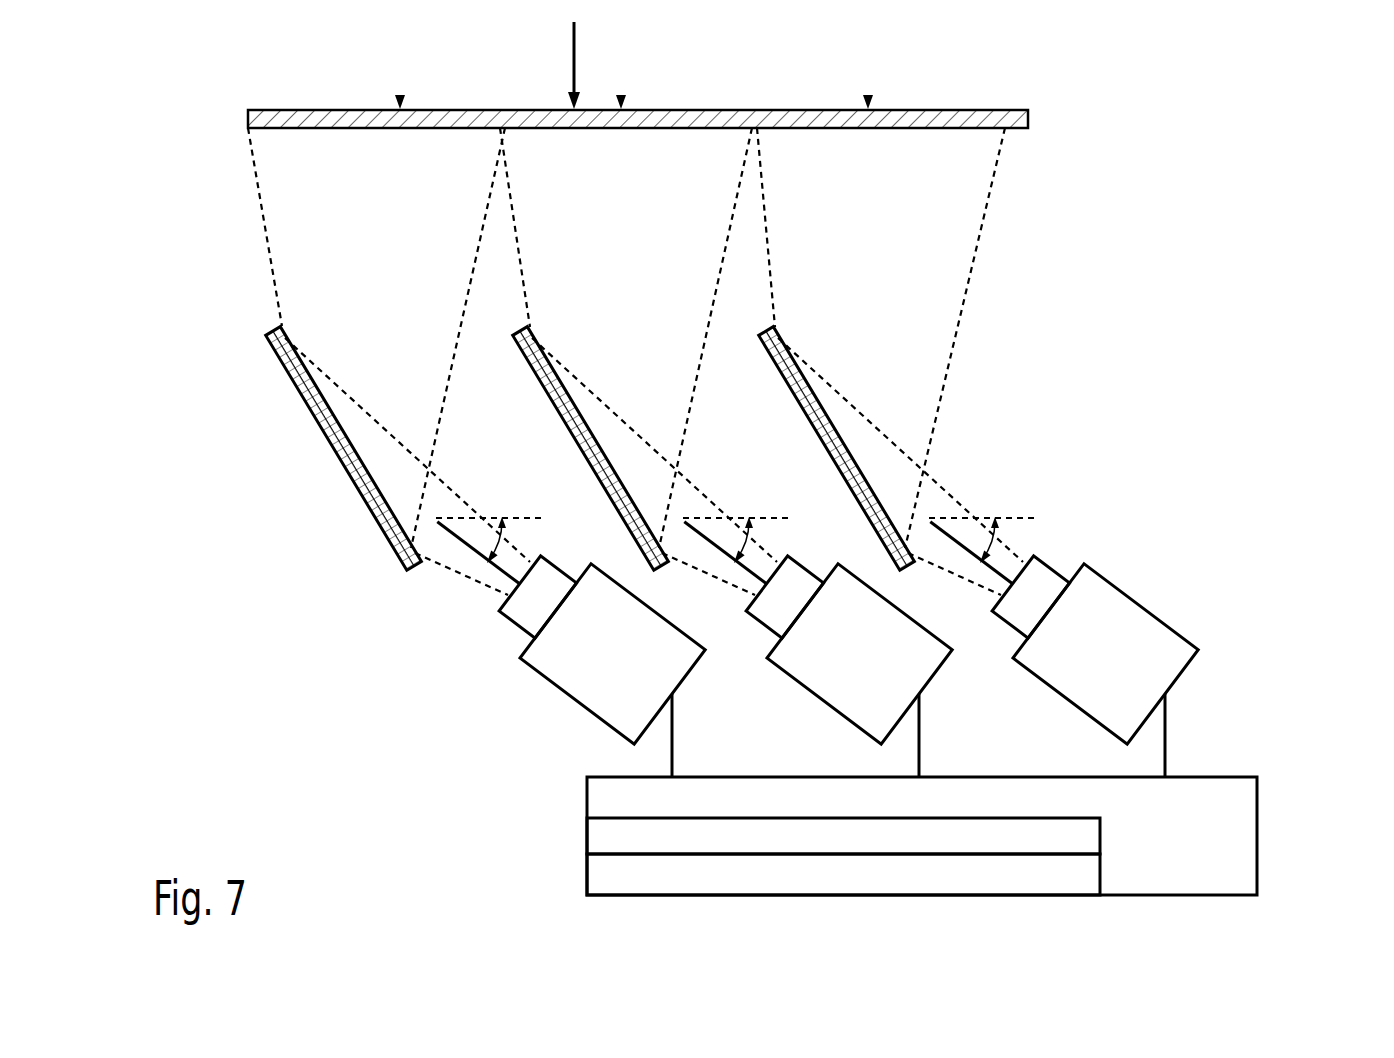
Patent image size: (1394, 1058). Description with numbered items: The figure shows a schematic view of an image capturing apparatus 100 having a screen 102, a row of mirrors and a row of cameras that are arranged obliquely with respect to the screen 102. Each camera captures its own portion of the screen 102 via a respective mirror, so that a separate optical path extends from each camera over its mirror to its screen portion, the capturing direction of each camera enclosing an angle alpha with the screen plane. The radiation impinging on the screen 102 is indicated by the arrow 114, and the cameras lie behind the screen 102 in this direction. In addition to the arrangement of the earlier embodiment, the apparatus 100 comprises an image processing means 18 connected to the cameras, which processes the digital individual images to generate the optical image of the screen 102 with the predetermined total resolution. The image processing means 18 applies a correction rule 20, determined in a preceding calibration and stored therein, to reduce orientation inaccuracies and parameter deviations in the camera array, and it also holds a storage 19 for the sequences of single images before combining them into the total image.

The image capturing apparatus 100 is at (1250, 51).
The screen 102 is at (1031, 118).
The arrow 114 is at (573, 68).
The image processing means 18 is at (1258, 792).
The storage for sequences of single images 19 is at (586, 878).
The correction rule 20 is at (586, 838).